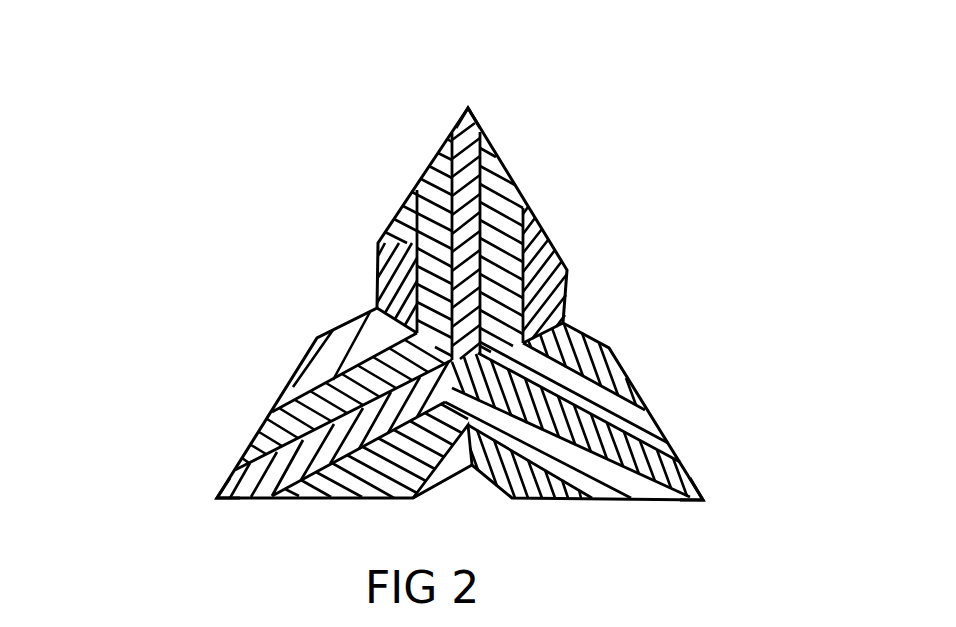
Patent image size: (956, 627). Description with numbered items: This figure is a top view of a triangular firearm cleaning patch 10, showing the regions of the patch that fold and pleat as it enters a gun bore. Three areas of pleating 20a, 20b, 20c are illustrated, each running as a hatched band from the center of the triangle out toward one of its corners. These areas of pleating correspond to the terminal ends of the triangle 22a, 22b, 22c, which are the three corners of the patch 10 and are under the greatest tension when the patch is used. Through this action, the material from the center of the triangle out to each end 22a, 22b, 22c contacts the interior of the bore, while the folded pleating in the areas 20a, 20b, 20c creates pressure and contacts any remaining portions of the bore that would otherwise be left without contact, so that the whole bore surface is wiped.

The patch 10 is at (384, 302).
The area of pleating 20a is at (690, 483).
The area of pleating 20b is at (505, 193).
The area of pleating 20c is at (386, 268).
The terminal end of the triangle 22a is at (468, 95).
The terminal end of the triangle 22b is at (712, 510).
The terminal end of the triangle 22c is at (203, 503).